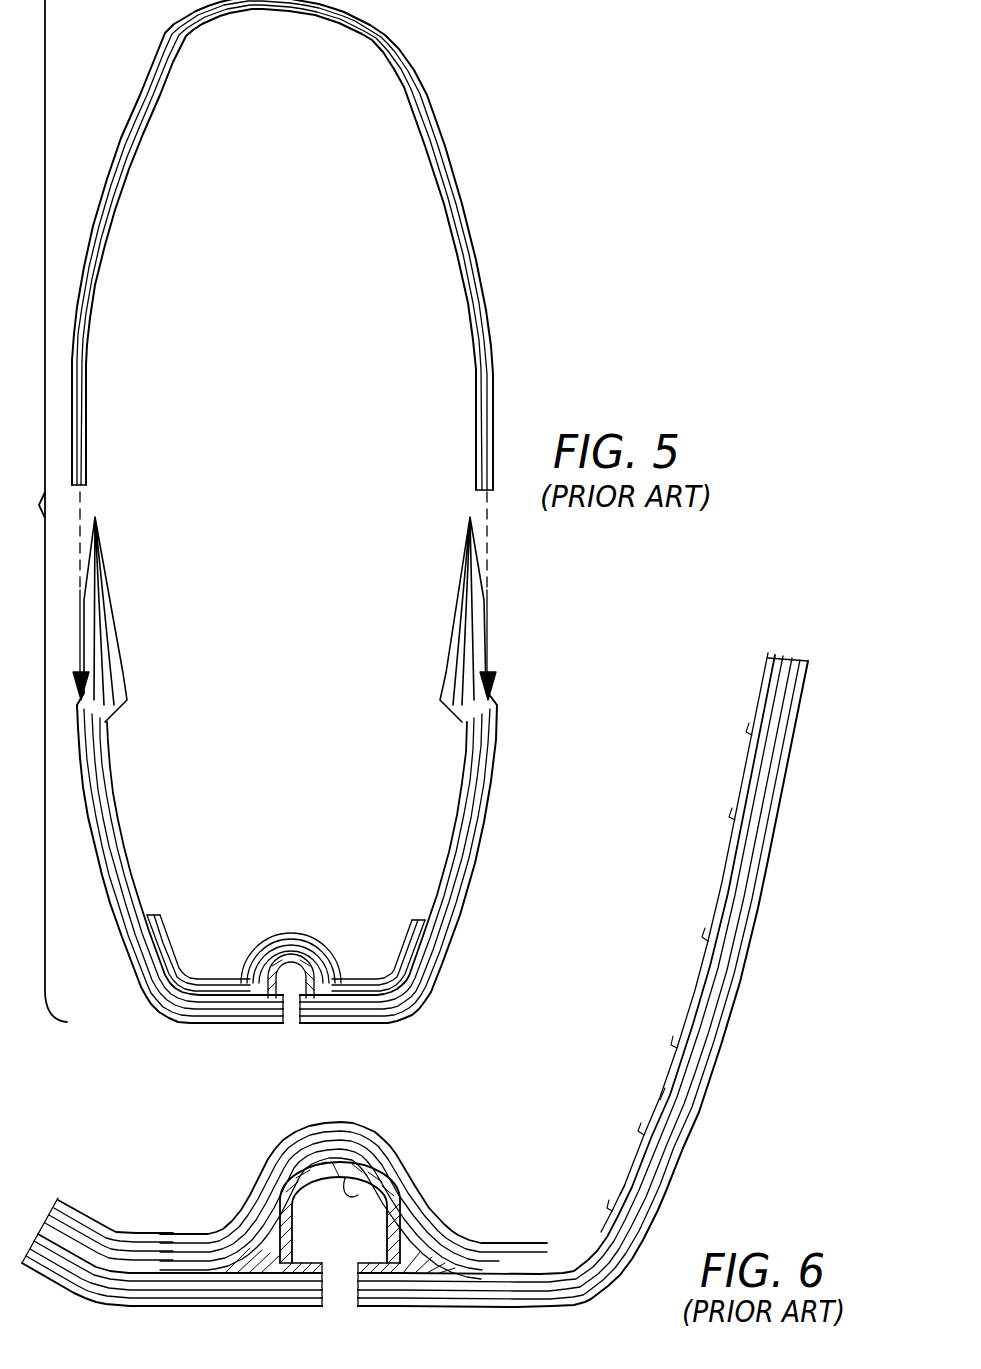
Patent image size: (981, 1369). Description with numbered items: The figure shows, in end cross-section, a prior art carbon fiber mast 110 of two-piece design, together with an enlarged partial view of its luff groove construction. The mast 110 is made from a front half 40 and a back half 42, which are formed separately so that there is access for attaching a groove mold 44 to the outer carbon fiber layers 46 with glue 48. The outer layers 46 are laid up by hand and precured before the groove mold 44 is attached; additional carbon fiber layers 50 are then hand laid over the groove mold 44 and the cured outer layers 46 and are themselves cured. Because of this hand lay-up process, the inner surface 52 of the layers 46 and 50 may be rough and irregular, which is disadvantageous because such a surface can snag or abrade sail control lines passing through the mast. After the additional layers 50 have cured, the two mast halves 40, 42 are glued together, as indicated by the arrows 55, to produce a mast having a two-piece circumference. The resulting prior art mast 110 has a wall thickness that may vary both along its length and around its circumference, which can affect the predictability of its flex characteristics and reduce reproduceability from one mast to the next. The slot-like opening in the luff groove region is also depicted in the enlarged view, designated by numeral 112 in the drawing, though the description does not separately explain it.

In FIG. 5, the front half 40 is at (84, 440).
In FIG. 5, the back half 42 is at (77, 760).
In FIG. 5, the groove mold 44 is at (288, 966).
In FIG. 6, the groove mold 44 is at (375, 1192).
In FIG. 5, the outer carbon fiber layers 46 is at (491, 385).
In FIG. 6, the outer carbon fiber layers 46 is at (700, 1062).
In FIG. 6, the glue 48 is at (455, 1240).
In FIG. 5, the additional carbon fiber layers 50 is at (199, 982).
In FIG. 6, the additional carbon fiber layers 50 is at (233, 1230).
In FIG. 5, the inner surface 52 is at (148, 138).
In FIG. 6, the inner surface 52 is at (627, 1182).
In FIG. 5, the arrows 55 is at (84, 645).
In FIG. 5, the prior art mast 110 is at (482, 232).
In FIG. 6, the prior art mast 110 is at (780, 895).
In FIG. 5, the slot 112 is at (292, 1033).
In FIG. 6, the slot 112 is at (342, 1300).